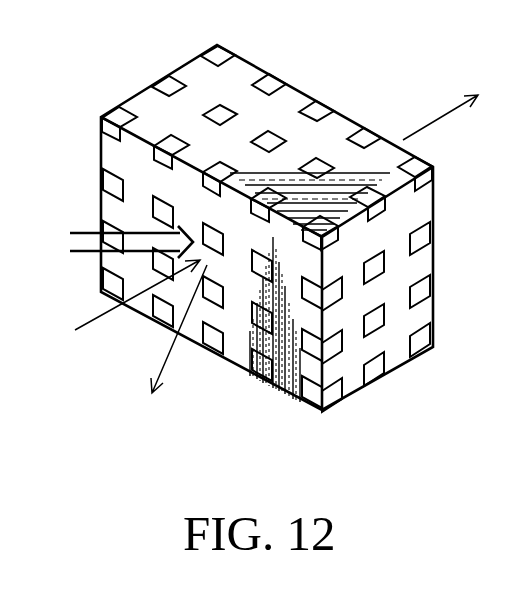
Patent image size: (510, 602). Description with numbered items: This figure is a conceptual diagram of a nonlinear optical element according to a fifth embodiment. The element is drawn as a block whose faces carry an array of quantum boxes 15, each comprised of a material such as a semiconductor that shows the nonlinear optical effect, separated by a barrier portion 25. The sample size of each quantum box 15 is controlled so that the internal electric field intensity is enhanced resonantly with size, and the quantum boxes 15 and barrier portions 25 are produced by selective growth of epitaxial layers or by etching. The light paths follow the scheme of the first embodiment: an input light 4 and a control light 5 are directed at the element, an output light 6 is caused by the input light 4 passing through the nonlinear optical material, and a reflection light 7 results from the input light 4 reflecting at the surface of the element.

The barrier portion 25 is at (190, 68).
The quantum box 15 is at (162, 200).
The control light 5 is at (87, 233).
The input light 4 is at (93, 320).
The reflection light 7 is at (172, 342).
The output light 6 is at (437, 120).